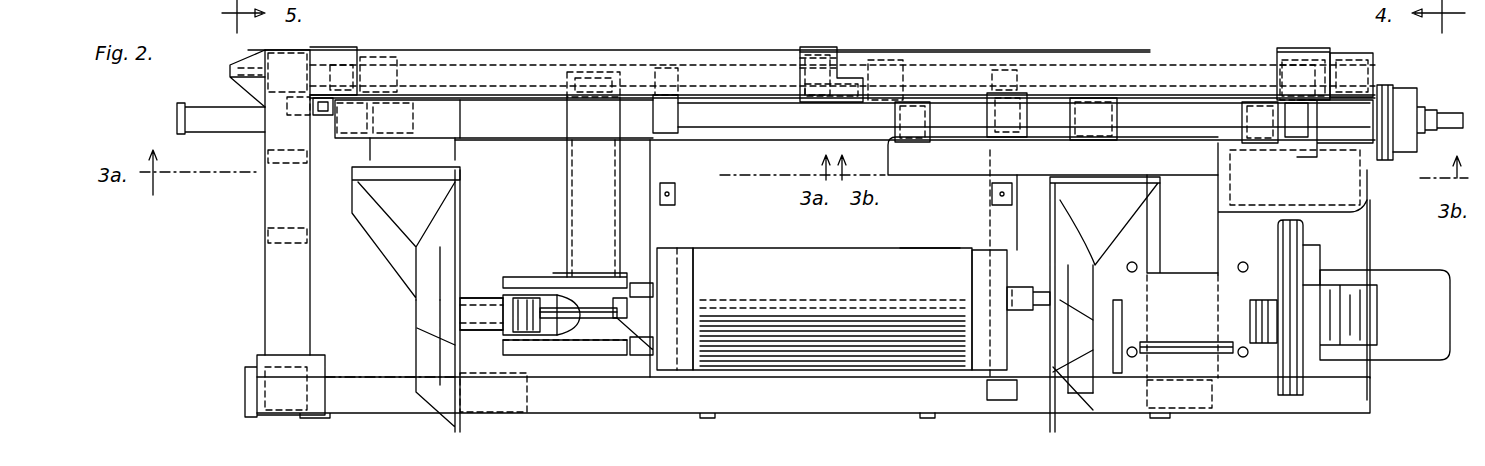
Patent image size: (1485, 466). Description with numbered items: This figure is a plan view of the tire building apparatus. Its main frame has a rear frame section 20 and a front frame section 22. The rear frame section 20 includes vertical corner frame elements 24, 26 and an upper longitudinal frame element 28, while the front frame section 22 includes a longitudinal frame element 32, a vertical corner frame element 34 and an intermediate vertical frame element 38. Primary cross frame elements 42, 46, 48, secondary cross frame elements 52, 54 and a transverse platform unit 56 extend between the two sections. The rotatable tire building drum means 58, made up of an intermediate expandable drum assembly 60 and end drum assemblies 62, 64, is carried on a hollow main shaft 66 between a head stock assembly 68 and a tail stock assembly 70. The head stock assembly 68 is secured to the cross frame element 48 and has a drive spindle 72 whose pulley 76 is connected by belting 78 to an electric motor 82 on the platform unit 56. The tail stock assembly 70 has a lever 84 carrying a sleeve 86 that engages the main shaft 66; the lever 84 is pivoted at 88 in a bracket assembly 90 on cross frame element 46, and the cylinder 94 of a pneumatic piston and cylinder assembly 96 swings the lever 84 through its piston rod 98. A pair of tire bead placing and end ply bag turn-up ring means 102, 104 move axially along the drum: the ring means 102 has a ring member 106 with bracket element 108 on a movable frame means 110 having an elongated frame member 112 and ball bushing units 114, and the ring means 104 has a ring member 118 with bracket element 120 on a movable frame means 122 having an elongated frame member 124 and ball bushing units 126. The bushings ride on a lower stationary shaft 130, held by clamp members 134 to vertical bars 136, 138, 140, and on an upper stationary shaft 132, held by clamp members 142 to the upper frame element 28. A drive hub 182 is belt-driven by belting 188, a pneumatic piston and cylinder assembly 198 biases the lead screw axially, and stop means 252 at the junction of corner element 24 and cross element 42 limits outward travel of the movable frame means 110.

The rear frame section 20 is at (722, 42).
The front frame section 22 is at (727, 412).
The vertical corner frame element 24 is at (248, 85).
The vertical corner frame element 26 is at (1348, 68).
The upper longitudinal frame element 28 is at (1062, 50).
The longitudinal frame element 32 is at (920, 398).
The vertical corner frame element 34 is at (257, 381).
The intermediate vertical frame element 38 is at (1178, 398).
The primary cross frame element 42 is at (265, 313).
The primary cross frame element 46 is at (572, 210).
The primary cross frame element 48 is at (1218, 192).
The secondary cross frame element 52 is at (675, 215).
The secondary cross frame element 54 is at (992, 218).
The transverse platform unit 56 is at (1367, 238).
The rotatable tire building drum means 58 is at (897, 238).
The intermediate expandable drum assembly 60 is at (804, 254).
The end drum assembly 62 is at (658, 252).
The end drum assembly 64 is at (998, 256).
The hollow main shaft 66 is at (636, 283).
The head stock assembly 68 is at (1177, 284).
The tail stock assembly 70 is at (1041, 272).
The drive spindle 72 is at (1258, 300).
The pulley 76 is at (1278, 236).
The belting 78 is at (1303, 233).
The electric motor 82 is at (1422, 314).
The lever 84 is at (613, 298).
The sleeve 86 is at (600, 318).
The pivot 88 is at (640, 358).
The bracket assembly 90 is at (515, 277).
The cylinder 94 is at (480, 298).
The pneumatic piston and cylinder assembly 96 is at (484, 340).
The piston rod 98 is at (562, 320).
The tire bead placing and end ply bag turn-up ring means 102 is at (402, 302).
The tire bead placing and end ply bag turn-up ring means 104 is at (1078, 420).
The tire bead placing and end ply bag turn-up ring member 106 is at (418, 346).
The bracket element 108 is at (378, 218).
The movable frame means 110 is at (482, 142).
The elongated frame member 112 is at (540, 140).
The ball bushing units 114 is at (882, 60).
The tire bead placing and end ply bag turn-up ring member 118 is at (1058, 405).
The bracket element 120 is at (1130, 220).
The movable frame means 122 is at (1178, 186).
The elongated frame member 124 is at (950, 168).
The ball bushing units 126 is at (1262, 122).
The lower stationary shaft 130 is at (508, 70).
The upper stationary shaft 132 is at (755, 118).
The clamp members 134 is at (1283, 78).
The vertical bar 136 is at (320, 47).
The vertical bar 138 is at (822, 47).
The vertical bar 140 is at (1300, 48).
The clamp members 142 is at (1300, 137).
The drive hub 182 is at (1412, 90).
The belting 188 is at (1386, 85).
The pneumatic piston and cylinder assembly 198 is at (165, 112).
The stop means 252 is at (322, 138).